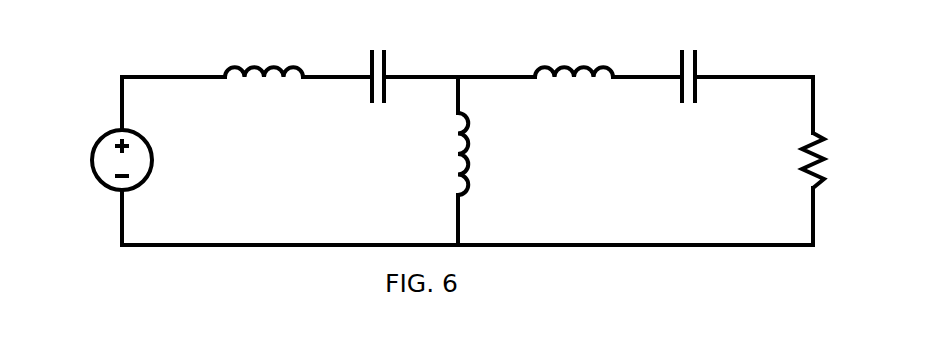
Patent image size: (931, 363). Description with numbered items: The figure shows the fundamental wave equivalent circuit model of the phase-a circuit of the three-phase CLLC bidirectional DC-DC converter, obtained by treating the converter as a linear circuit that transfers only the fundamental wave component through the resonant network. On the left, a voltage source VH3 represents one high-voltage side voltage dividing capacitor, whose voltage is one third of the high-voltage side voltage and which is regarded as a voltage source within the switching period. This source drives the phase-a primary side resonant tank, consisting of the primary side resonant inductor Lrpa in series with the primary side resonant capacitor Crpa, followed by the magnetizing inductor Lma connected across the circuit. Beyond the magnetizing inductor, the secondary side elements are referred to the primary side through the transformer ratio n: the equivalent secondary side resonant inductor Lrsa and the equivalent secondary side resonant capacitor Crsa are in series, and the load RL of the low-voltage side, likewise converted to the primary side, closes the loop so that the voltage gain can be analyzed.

The voltage source VH/3 VH3 is at (84, 160).
The primary side resonant inductor Lrpa is at (264, 42).
The primary side resonant capacitor Crpa is at (376, 55).
The magnetizing inductor Lma is at (501, 154).
The equivalent secondary side resonant inductor converted to the primary side Lrsa is at (567, 42).
The equivalent secondary side resonant capacitor converted to the primary side Crsa is at (689, 55).
The load RL is at (838, 161).